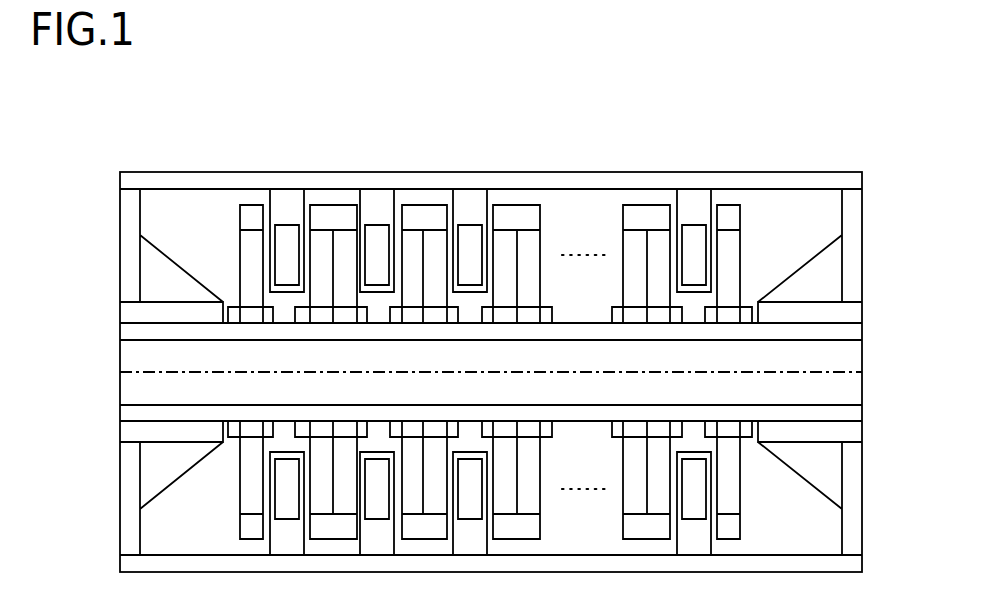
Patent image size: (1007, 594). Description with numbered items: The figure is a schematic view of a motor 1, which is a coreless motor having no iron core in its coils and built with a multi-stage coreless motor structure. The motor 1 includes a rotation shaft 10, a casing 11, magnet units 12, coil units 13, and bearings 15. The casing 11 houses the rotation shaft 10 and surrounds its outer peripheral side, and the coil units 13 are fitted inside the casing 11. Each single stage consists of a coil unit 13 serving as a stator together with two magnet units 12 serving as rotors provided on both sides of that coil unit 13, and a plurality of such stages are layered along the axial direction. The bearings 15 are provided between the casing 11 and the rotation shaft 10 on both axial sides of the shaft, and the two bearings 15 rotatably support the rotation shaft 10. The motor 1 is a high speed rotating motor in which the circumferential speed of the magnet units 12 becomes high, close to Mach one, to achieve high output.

The motor 1 is at (487, 106).
The rotation shaft 10 is at (856, 331).
The casing 11 is at (155, 172).
The magnet unit 12 is at (442, 242).
The coil unit 13 is at (381, 242).
The bearing 15 is at (121, 310).